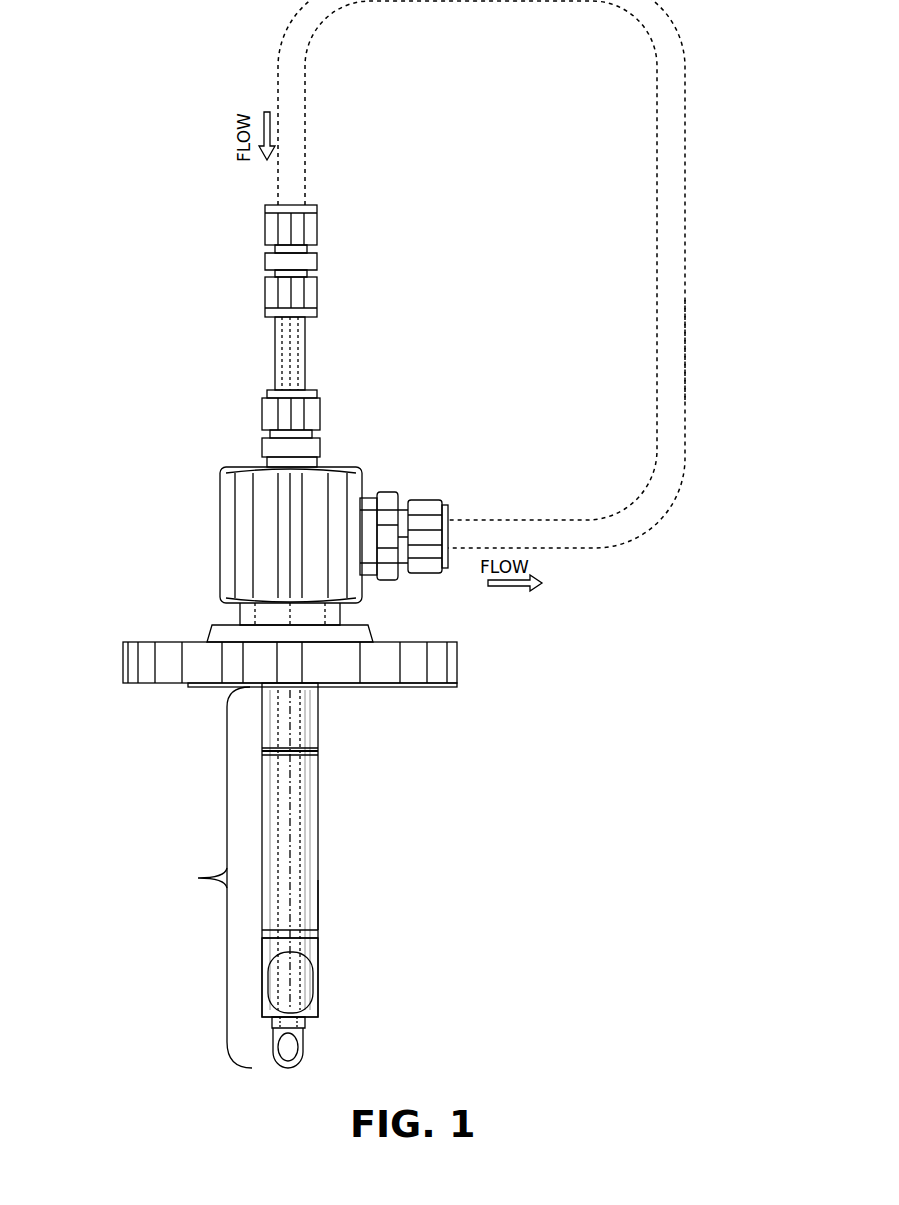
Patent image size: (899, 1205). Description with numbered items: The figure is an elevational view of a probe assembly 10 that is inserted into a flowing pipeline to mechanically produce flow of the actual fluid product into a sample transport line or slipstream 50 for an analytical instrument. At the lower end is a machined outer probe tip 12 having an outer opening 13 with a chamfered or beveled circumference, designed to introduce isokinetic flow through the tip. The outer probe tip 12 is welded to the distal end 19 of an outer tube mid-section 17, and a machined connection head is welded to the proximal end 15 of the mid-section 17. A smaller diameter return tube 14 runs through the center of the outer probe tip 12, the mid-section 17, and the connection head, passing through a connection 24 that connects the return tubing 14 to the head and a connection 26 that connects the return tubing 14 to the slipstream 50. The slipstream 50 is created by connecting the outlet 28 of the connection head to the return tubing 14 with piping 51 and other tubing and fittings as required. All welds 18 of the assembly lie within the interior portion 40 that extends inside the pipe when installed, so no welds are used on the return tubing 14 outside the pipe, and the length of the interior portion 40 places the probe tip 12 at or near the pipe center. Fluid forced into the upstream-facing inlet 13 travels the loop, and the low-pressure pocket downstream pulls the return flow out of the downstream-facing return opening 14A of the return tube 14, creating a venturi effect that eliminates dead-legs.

The probe assembly 10 is at (137, 522).
The outer probe tip 12 is at (320, 960).
The outer opening 13 is at (262, 1010).
The return tube 14 is at (283, 355).
The return opening 14A is at (295, 1050).
The proximal end 15 is at (318, 757).
The outer tube mid-section 17 is at (318, 810).
The welds 18 is at (318, 750).
The distal end 19 is at (327, 908).
The connection 24 is at (322, 415).
The connection 26 is at (317, 230).
The outlet 28 is at (418, 507).
The interior portion 40 is at (290, 855).
The sample transport line 50 is at (698, 130).
The piping 51 is at (675, 338).